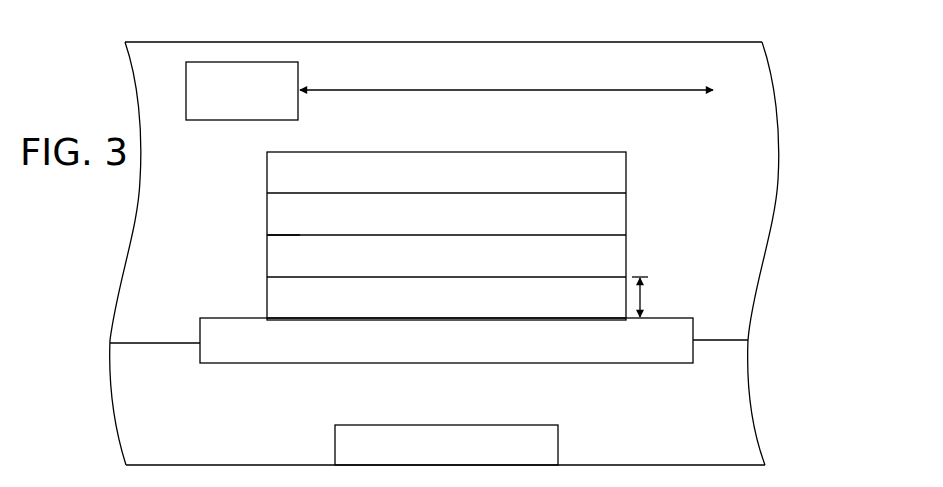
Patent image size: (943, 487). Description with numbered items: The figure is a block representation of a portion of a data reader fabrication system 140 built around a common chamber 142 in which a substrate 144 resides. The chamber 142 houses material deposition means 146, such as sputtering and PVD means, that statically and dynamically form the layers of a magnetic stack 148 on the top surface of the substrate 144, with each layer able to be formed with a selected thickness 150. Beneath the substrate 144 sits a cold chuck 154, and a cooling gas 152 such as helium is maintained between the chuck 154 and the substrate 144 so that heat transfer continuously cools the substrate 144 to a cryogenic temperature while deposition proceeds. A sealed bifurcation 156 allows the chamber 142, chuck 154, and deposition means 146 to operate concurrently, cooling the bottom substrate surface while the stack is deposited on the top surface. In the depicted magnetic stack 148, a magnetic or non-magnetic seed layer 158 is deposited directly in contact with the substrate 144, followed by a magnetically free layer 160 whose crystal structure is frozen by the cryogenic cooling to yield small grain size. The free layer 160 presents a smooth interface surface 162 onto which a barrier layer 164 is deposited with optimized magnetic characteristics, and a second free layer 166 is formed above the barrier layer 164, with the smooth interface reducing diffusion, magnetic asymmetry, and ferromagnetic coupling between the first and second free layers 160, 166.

The data reader fabrication system 140 is at (105, 38).
The common chamber 142 is at (738, 254).
The substrate 144 is at (653, 350).
The material deposition means 146 is at (227, 99).
The magnetic stack 148 is at (628, 151).
The thickness 150 is at (656, 297).
The cooling gas 152 is at (157, 421).
The cold chuck 154 is at (431, 454).
The sealed bifurcation 156 is at (163, 342).
The seed layer 158 is at (586, 307).
The magnetically free layer 160 is at (586, 264).
The interface surface 162 is at (284, 235).
The barrier layer 164 is at (586, 222).
The second free layer 166 is at (586, 181).